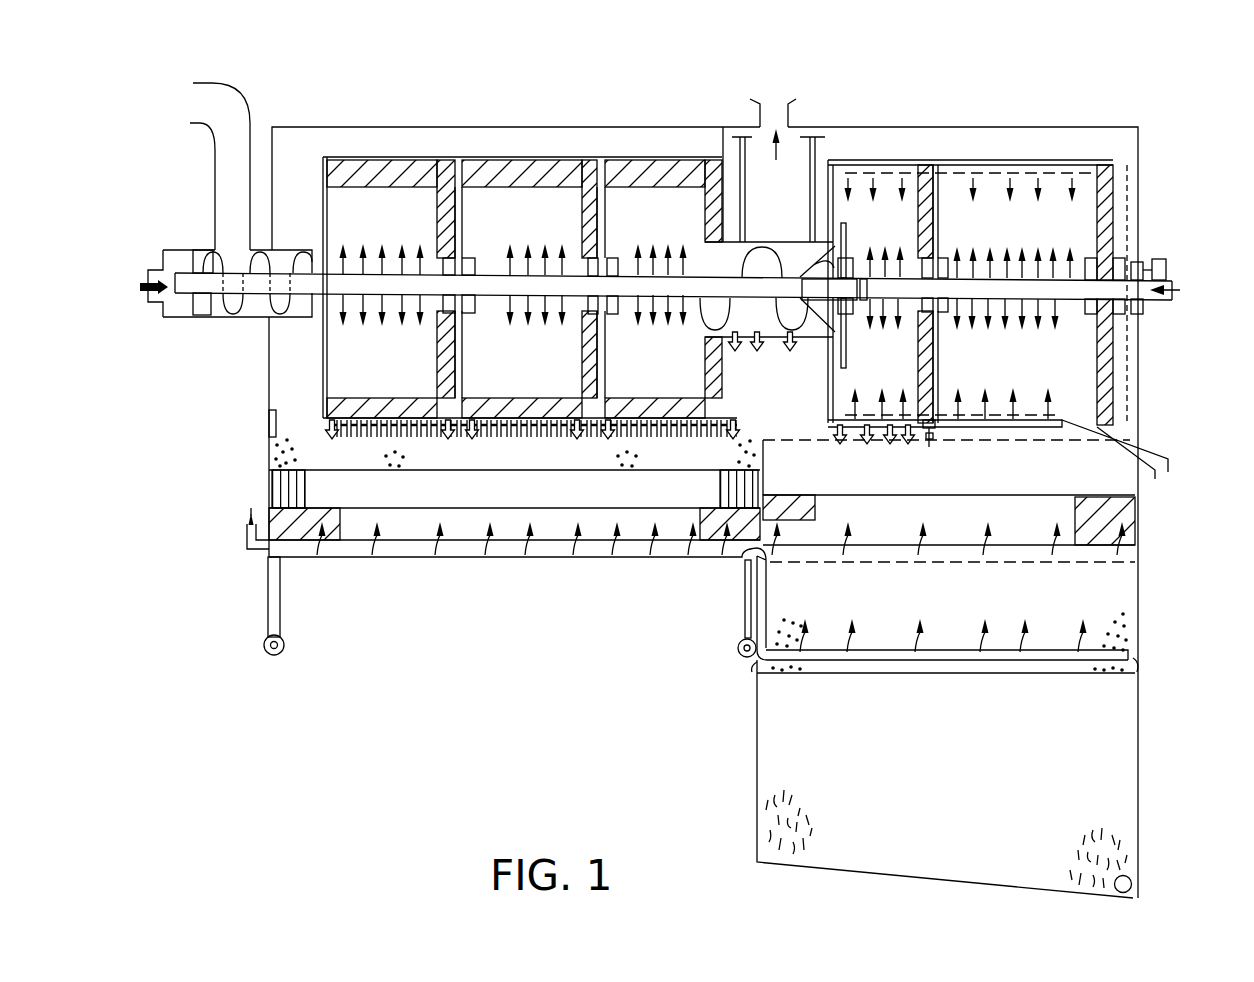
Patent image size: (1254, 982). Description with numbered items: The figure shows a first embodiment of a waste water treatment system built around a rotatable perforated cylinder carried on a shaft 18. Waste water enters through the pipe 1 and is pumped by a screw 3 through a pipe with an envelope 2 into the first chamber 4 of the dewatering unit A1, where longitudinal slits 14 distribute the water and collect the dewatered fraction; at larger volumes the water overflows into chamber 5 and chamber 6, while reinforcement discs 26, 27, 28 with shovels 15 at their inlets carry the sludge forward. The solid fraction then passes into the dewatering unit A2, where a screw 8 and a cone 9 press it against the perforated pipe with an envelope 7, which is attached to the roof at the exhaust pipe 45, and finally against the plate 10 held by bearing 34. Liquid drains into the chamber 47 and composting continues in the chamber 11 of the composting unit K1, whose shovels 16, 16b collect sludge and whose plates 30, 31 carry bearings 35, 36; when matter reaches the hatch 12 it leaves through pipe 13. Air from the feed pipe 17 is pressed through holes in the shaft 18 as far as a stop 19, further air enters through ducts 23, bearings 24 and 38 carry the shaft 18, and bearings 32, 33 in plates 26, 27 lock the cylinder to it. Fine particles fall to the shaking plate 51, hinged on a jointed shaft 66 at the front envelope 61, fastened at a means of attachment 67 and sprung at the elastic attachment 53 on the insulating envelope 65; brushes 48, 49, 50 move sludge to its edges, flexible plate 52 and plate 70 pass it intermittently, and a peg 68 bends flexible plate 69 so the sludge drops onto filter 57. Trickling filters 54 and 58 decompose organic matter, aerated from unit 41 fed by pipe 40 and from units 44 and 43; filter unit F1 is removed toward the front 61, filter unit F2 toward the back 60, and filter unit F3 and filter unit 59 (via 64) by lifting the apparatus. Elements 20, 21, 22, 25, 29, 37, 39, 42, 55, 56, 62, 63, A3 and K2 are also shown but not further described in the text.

The pipe 1 is at (224, 125).
The pipe with an envelope 2 is at (217, 308).
The screw 3 is at (247, 313).
The chamber 4 is at (400, 192).
The chamber 5 is at (510, 195).
The chamber 6 is at (672, 200).
The pipe with an envelope 7 is at (741, 158).
The screw 8 is at (763, 257).
The cone 9 is at (817, 267).
The plate 10 is at (845, 180).
The chamber 11 is at (1022, 197).
The hatch 12 is at (1085, 424).
The pipe 13 is at (1168, 465).
The longitudinal slits 14 is at (358, 172).
The shovels 15 is at (717, 158).
The shovels 16 is at (927, 167).
The shovels 16b is at (1103, 180).
The feed pipe 17 is at (156, 270).
The shaft/ventilation duct 18 is at (352, 290).
The stop 19 is at (861, 272).
The shaft drive end 20 is at (1180, 290).
The outer casing 21 is at (1132, 197).
The insulation gap 22 is at (1132, 168).
The ducts 23 is at (1060, 173).
The bearing 24 is at (198, 252).
The inner wall 25 is at (322, 185).
The reinforcement disc 26 is at (450, 165).
The reinforcement disc 27 is at (608, 168).
The reinforcement disc 28 is at (730, 152).
The duct wall 29 is at (829, 152).
The plate 30 is at (934, 175).
The plate 31 is at (1103, 222).
The bearing 32 is at (448, 257).
The bearing 33 is at (592, 256).
The bearing 34 is at (852, 222).
The bearing 35 is at (928, 257).
The bearing 36 is at (1118, 257).
The shaft seal 37 is at (1143, 250).
The bearing 38 is at (1143, 308).
The coupling 39 is at (1167, 262).
The pipe 40 is at (245, 540).
The unit 41 is at (455, 548).
The connecting duct 42 is at (763, 600).
The unit 43 is at (787, 655).
The unit 44 is at (1137, 562).
The pipe 45 is at (782, 100).
The chamber 47 is at (878, 368).
The brush 48 is at (368, 443).
The brush 49 is at (558, 435).
The brush 50 is at (687, 435).
The shaking plate 51 is at (318, 436).
The flexible plate 52 is at (737, 432).
The elastic/springy means of attachment 53 is at (929, 446).
The filter 54 is at (268, 450).
The filter chamber 55 is at (268, 476).
The drain 56 is at (246, 528).
The filter 57 is at (748, 553).
The filter 58 is at (780, 617).
The filter unit 59 is at (772, 768).
The back of the apparatus 60 is at (1138, 388).
The front of the apparatus 61 is at (268, 358).
The wheel 62 is at (1133, 886).
The support leg 63 is at (282, 615).
The removal opening 64 is at (755, 666).
The insulating envelope 65 is at (288, 128).
The jointed shaft 66 is at (268, 440).
The means of attachment 67 is at (268, 414).
The peg 68 is at (937, 426).
The flexible plate 69 is at (935, 440).
The plate 70 is at (512, 437).
The unit A1 is at (545, 205).
The unit A2 is at (762, 153).
The air flow A3 is at (832, 446).
The filter unit F1 is at (312, 486).
The filter unit F2 is at (1110, 610).
The filter unit F3 is at (1110, 762).
The unit K1 is at (985, 190).
The cooling air K2 is at (1018, 512).